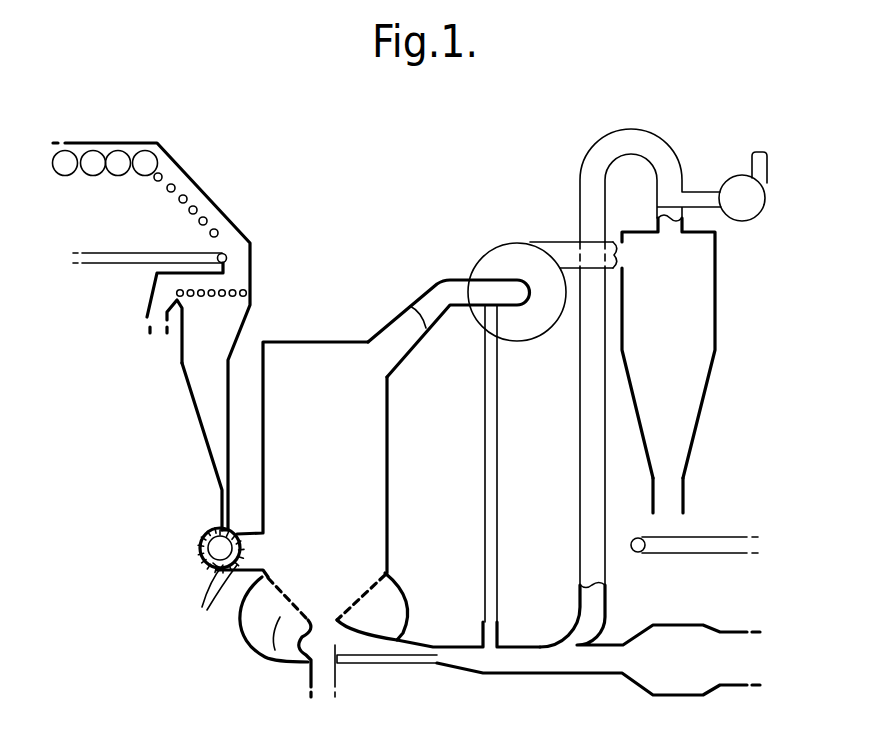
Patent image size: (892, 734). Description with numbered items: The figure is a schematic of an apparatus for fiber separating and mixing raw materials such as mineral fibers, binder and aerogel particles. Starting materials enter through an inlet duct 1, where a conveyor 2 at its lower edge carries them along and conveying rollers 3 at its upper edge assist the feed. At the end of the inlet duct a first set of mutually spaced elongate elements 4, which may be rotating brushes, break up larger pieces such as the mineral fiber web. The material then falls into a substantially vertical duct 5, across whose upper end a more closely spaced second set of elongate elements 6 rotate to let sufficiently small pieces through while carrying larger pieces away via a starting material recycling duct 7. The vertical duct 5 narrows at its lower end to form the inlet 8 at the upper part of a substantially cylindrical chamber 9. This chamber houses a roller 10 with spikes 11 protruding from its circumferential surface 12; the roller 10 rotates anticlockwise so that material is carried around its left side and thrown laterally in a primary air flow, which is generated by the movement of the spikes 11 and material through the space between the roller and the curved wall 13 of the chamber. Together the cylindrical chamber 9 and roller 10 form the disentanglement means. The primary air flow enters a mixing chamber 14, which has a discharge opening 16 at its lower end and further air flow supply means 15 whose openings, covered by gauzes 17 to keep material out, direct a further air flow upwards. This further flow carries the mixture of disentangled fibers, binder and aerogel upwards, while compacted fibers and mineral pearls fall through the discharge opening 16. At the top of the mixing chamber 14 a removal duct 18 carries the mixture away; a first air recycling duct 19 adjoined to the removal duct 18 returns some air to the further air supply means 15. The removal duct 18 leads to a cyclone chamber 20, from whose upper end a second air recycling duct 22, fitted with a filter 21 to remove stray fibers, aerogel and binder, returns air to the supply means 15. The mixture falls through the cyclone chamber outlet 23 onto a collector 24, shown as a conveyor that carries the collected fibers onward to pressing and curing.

The inlet duct 1 is at (118, 207).
The conveyor 2 is at (110, 263).
The conveying rollers 3 is at (90, 168).
The first set of mutually spaced elongate elements 4 is at (184, 199).
The vertical duct 5 is at (210, 390).
The second set of mutually spaced elongate elements 6 is at (240, 293).
The starting material recycling duct 7 is at (147, 317).
The inlet 8 is at (222, 530).
The cylindrical chamber 9 is at (202, 545).
The roller 10 is at (213, 567).
The spikes 11 is at (209, 601).
The circumferential surface 12 is at (203, 533).
The curved wall 13 is at (213, 563).
The mixing chamber 14 is at (328, 378).
The further air flow supply means 15 is at (387, 610).
The discharge opening 16 is at (327, 627).
The gauzes 17 is at (363, 590).
The removal duct 18 is at (393, 327).
The first air recycling duct 19 is at (497, 450).
The cyclone chamber 20 is at (663, 313).
The filter 21 is at (745, 203).
The second air recycling duct 22 is at (593, 160).
The cyclone chamber outlet 23 is at (667, 498).
The collector 24 is at (690, 555).